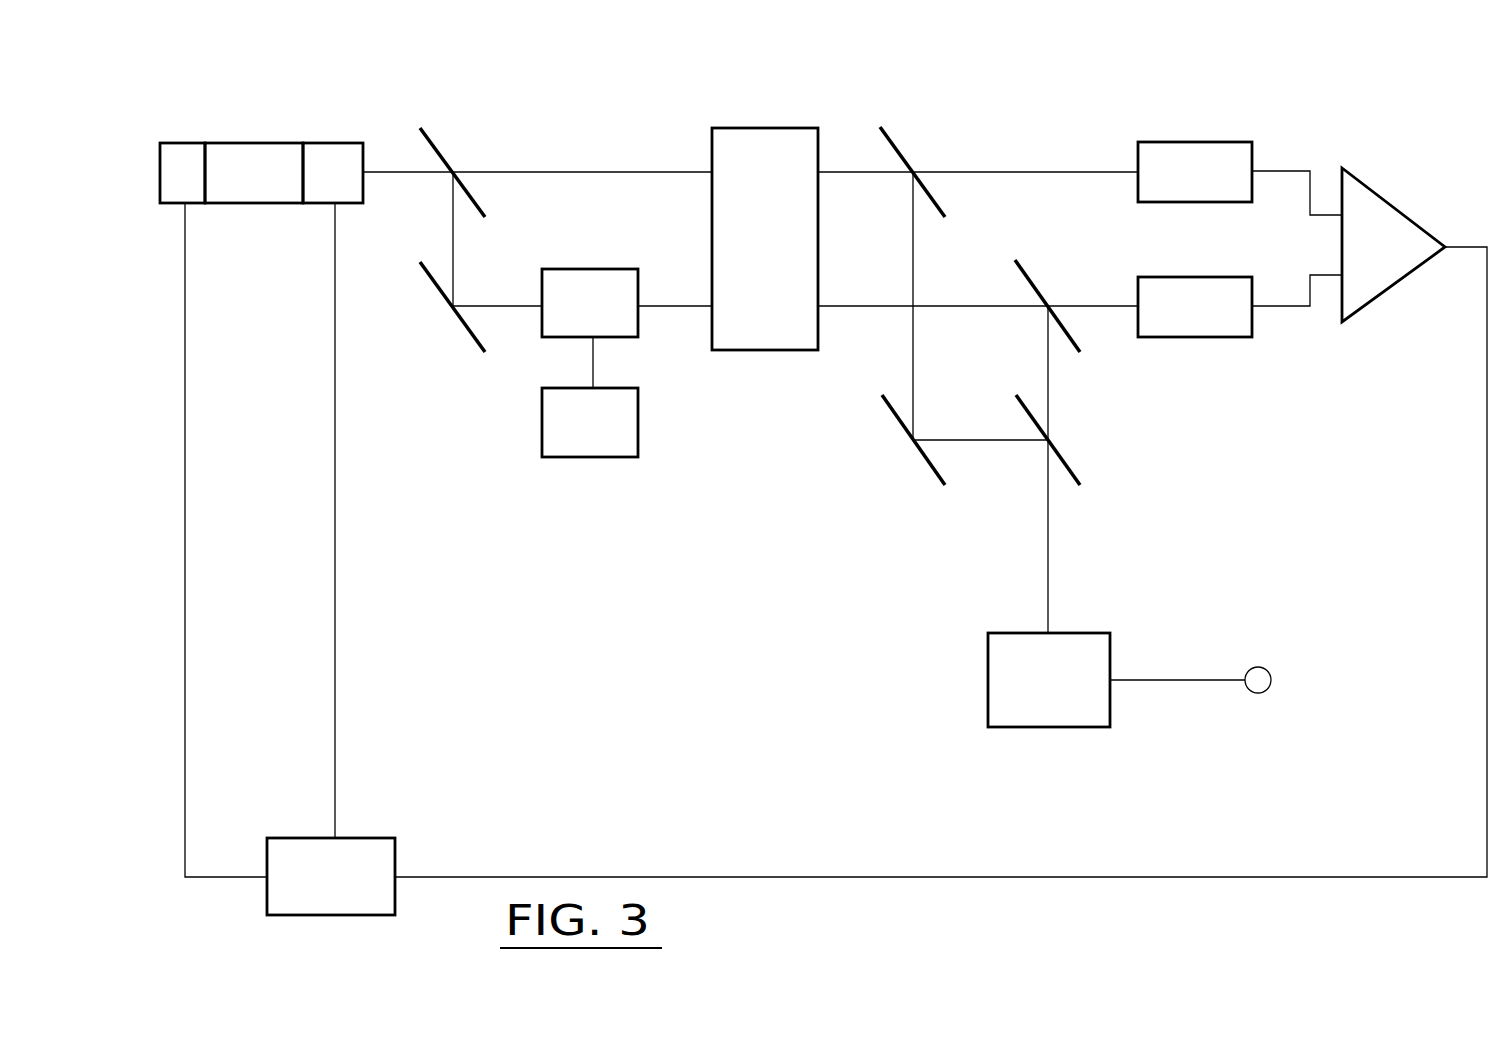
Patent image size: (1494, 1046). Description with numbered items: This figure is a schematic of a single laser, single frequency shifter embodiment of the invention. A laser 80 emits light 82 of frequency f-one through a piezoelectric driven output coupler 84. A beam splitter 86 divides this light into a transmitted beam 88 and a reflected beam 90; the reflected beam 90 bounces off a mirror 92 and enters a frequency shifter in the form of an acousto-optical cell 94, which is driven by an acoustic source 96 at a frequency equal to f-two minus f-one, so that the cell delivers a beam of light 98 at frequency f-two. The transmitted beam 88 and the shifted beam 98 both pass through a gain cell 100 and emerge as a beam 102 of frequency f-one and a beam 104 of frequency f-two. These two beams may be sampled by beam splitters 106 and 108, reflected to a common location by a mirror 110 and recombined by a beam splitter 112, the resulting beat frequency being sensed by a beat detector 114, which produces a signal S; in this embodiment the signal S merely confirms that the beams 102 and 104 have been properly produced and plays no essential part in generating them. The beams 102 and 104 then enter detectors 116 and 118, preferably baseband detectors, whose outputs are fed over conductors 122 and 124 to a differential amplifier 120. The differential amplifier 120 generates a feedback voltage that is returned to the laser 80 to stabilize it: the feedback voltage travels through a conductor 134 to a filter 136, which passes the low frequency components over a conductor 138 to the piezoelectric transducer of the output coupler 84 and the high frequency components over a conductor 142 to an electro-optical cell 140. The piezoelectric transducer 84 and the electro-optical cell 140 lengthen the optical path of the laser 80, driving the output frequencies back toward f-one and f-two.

The laser 80 is at (272, 148).
The light 82 is at (422, 177).
The piezoelectric driven output coupler 84 is at (317, 160).
The beam splitter 86 is at (437, 150).
The transmitted beam 88 is at (587, 170).
The reflected beam 90 is at (452, 208).
The mirror 92 is at (435, 287).
The acousto-optical cell 94 is at (562, 277).
The acoustic source 96 is at (548, 423).
The beam of light 98 is at (673, 308).
The gain cell 100 is at (765, 337).
The beam 102 is at (853, 165).
The beam 104 is at (885, 303).
The beam splitter 106 is at (908, 157).
The beam splitter 108 is at (1033, 277).
The mirror 110 is at (900, 433).
The beam splitter 112 is at (1063, 455).
The beat detector 114 is at (1097, 700).
The detector 116 is at (1205, 142).
The detector 118 is at (1168, 325).
The differential amplifier 120 is at (1373, 217).
The conductor 122 is at (1312, 172).
The conductor 124 is at (1313, 307).
The conductor 134 is at (835, 876).
The filter 136 is at (372, 845).
The conductor 138 is at (335, 480).
The electro-optical cell 140 is at (183, 150).
The conductor 142 is at (185, 483).